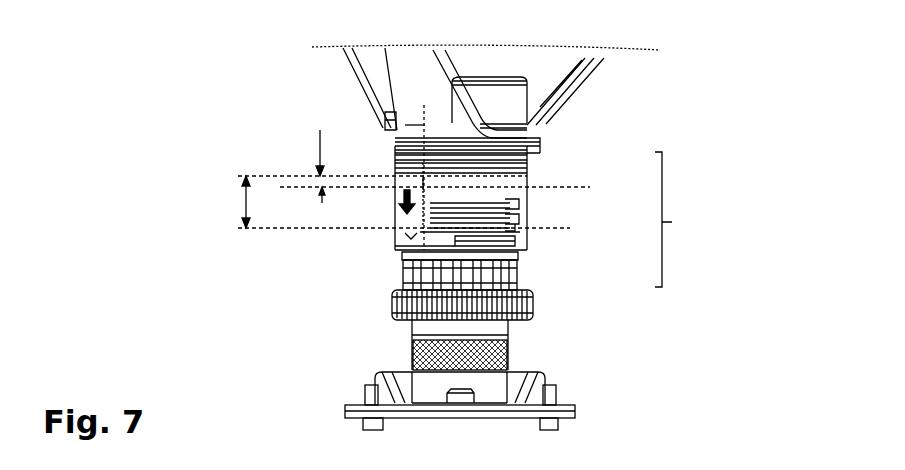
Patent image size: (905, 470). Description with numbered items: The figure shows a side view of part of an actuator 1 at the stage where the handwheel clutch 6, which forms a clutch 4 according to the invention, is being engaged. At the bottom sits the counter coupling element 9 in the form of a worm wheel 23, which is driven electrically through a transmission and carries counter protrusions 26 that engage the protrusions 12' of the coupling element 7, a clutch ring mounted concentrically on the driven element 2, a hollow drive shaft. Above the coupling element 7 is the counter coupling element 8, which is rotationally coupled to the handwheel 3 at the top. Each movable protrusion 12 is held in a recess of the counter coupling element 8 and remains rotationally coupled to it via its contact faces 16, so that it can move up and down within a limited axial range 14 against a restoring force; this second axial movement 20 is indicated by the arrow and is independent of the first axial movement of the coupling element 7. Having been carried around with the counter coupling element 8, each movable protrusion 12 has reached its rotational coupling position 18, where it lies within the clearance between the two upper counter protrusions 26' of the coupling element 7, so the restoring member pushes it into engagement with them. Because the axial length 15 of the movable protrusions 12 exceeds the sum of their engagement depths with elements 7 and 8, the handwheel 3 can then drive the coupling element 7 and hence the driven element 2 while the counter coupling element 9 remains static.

The actuator 1 is at (700, 130).
The driven element 2 is at (493, 328).
The handwheel 3 is at (557, 100).
The clutch 4 is at (691, 219).
The handwheel clutch 6 is at (691, 219).
The coupling element 7 is at (518, 253).
The counter coupling element 8 is at (515, 177).
The counter coupling element 9 is at (410, 370).
The movable protrusion 12 is at (491, 226).
The protrusions 12' is at (525, 289).
The limited axial range 14 is at (320, 130).
The axial length 15 is at (243, 202).
The contact faces 16 is at (423, 177).
The rotational coupling position 18 is at (423, 128).
The second axial movement 20 is at (402, 198).
The worm wheel 23 is at (392, 310).
The counter protrusions 26 is at (399, 304).
The upper counter protrusions 26' is at (372, 267).